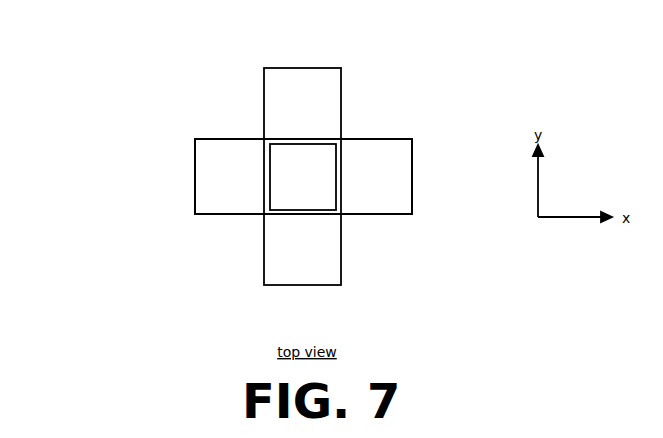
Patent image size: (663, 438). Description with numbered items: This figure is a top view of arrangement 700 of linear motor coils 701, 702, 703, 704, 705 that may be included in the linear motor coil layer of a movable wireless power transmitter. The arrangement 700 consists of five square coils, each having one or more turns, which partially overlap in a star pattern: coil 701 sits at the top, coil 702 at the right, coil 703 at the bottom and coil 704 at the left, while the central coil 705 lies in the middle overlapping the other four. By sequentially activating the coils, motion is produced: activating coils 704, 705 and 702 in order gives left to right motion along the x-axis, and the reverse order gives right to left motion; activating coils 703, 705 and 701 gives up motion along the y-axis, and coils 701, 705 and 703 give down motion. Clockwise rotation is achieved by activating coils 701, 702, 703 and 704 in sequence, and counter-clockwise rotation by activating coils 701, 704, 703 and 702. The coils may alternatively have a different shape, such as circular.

The arrangement of linear motor coils 700 is at (91, 37).
The linear motor coil 701 is at (300, 68).
The linear motor coil 702 is at (412, 172).
The linear motor coil 703 is at (300, 285).
The linear motor coil 704 is at (195, 172).
The linear motor coil 705 is at (303, 177).